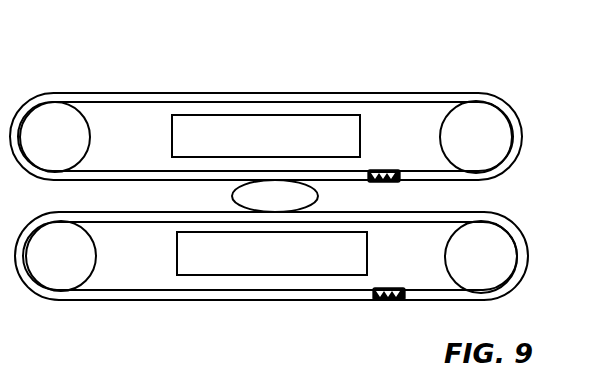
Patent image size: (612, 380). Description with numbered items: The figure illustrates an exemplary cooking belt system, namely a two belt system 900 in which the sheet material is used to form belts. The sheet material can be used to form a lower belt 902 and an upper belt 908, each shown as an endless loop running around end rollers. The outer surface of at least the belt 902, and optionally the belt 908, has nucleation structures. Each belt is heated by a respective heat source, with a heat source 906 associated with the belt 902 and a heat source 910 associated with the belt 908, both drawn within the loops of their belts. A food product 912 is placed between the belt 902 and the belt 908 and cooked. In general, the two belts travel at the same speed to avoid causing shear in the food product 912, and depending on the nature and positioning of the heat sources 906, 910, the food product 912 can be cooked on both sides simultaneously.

The two belt system 900 is at (392, 70).
The belt 908 is at (188, 93).
The heat source 910 is at (266, 136).
The food product 912 is at (248, 197).
The belt 902 is at (223, 298).
The heat source 906 is at (272, 253).